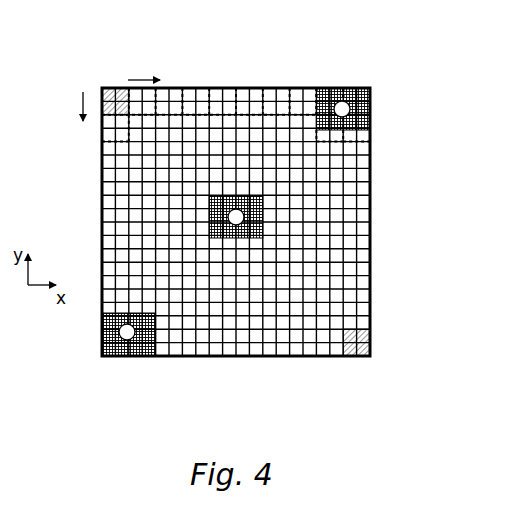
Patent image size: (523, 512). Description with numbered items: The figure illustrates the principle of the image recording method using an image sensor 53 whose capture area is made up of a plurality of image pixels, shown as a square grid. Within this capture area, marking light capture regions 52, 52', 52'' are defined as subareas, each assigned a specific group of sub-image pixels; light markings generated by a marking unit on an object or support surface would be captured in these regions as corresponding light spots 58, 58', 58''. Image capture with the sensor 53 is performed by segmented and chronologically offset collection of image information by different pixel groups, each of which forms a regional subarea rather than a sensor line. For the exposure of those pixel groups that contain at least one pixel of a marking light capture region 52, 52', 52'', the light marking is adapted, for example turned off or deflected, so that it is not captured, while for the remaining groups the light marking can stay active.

The image sensor 53 is at (246, 46).
The marking light capture region 52 is at (373, 99).
The light spot 58 is at (382, 105).
The marking light capture region 52' is at (323, 225).
The light spot 58' is at (333, 247).
The marking light capture region 52'' is at (97, 358).
The light spot 58'' is at (156, 363).